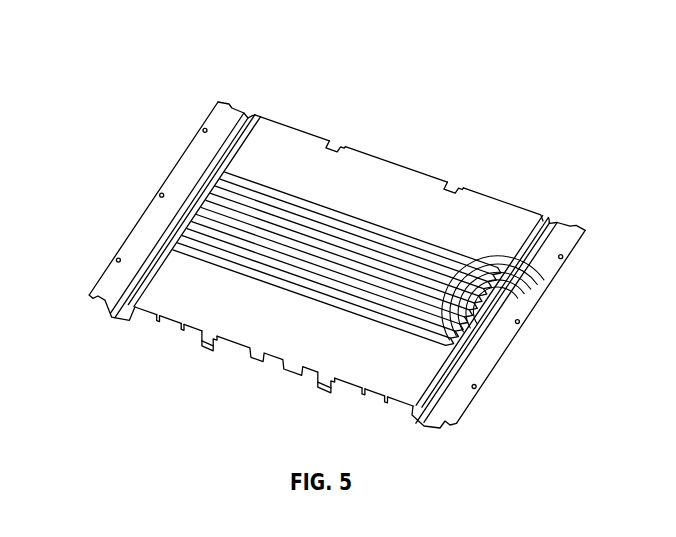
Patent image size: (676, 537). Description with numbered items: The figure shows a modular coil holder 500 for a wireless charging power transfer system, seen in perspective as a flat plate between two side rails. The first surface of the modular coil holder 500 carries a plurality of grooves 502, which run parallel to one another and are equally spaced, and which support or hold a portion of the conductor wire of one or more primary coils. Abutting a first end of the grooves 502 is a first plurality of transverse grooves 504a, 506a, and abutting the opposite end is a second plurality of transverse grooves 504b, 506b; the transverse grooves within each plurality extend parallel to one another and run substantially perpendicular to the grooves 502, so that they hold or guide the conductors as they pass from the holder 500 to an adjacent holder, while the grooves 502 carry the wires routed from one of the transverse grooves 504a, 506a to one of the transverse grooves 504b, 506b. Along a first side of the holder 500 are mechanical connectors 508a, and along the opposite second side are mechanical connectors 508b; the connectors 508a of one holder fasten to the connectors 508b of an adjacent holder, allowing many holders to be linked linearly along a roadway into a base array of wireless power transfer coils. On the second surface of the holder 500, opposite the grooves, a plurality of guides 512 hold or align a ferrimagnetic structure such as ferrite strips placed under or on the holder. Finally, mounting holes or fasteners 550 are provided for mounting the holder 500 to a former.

The modular coil holder 500 is at (116, 37).
The mounting holes or fasteners 550 is at (205, 127).
The plurality of grooves 502 is at (506, 356).
The transverse groove 504a is at (548, 218).
The transverse groove 504b is at (254, 114).
The transverse groove 506a is at (556, 223).
The transverse groove 506b is at (246, 108).
The mechanical connectors 508a is at (320, 382).
The mechanical connectors 508b is at (456, 183).
The guides 512 is at (185, 330).